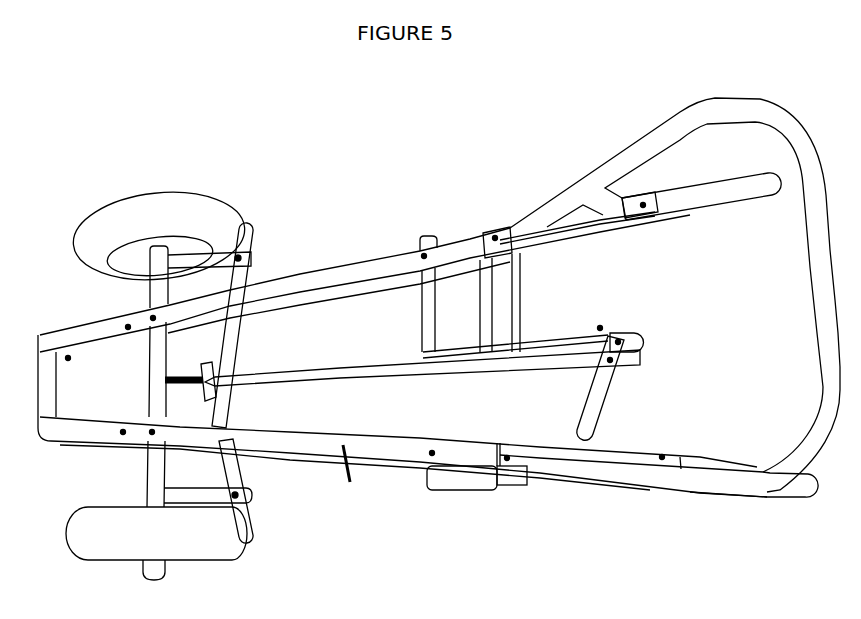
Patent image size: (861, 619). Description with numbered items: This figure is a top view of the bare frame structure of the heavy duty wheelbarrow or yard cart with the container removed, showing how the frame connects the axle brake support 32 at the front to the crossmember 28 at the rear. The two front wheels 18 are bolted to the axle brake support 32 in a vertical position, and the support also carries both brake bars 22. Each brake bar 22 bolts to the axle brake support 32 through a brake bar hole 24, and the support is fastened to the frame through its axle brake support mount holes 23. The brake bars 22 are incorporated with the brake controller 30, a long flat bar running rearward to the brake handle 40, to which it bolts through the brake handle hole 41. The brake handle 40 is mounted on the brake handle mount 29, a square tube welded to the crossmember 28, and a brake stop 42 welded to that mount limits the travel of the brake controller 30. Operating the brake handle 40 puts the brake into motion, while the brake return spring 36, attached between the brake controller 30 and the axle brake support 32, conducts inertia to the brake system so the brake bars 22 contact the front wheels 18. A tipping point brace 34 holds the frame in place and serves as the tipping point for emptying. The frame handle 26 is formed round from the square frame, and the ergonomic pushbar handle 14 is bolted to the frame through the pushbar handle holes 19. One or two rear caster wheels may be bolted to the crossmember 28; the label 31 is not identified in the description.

The ergonomic pushbar handle 14 is at (823, 267).
The front wheels 18 is at (143, 218).
The ergonomic pushbar handle holes 19 is at (646, 208).
The brake bar 22 is at (262, 268).
The axle brake support mount hole 23 is at (130, 330).
The brake bar hole 24 is at (242, 258).
The frame handle 26 is at (747, 192).
The crossmember 28 is at (453, 305).
The brake handle mount 29 is at (533, 343).
The brake controller 30 is at (410, 375).
The pivot 31 is at (421, 254).
The axle brake support 32 is at (140, 280).
The tipping point brace 34 is at (58, 385).
The brake return spring 36 is at (203, 390).
The brake handle 40 is at (598, 413).
The brake handle hole 41 is at (638, 350).
The brake stop 42 is at (602, 326).